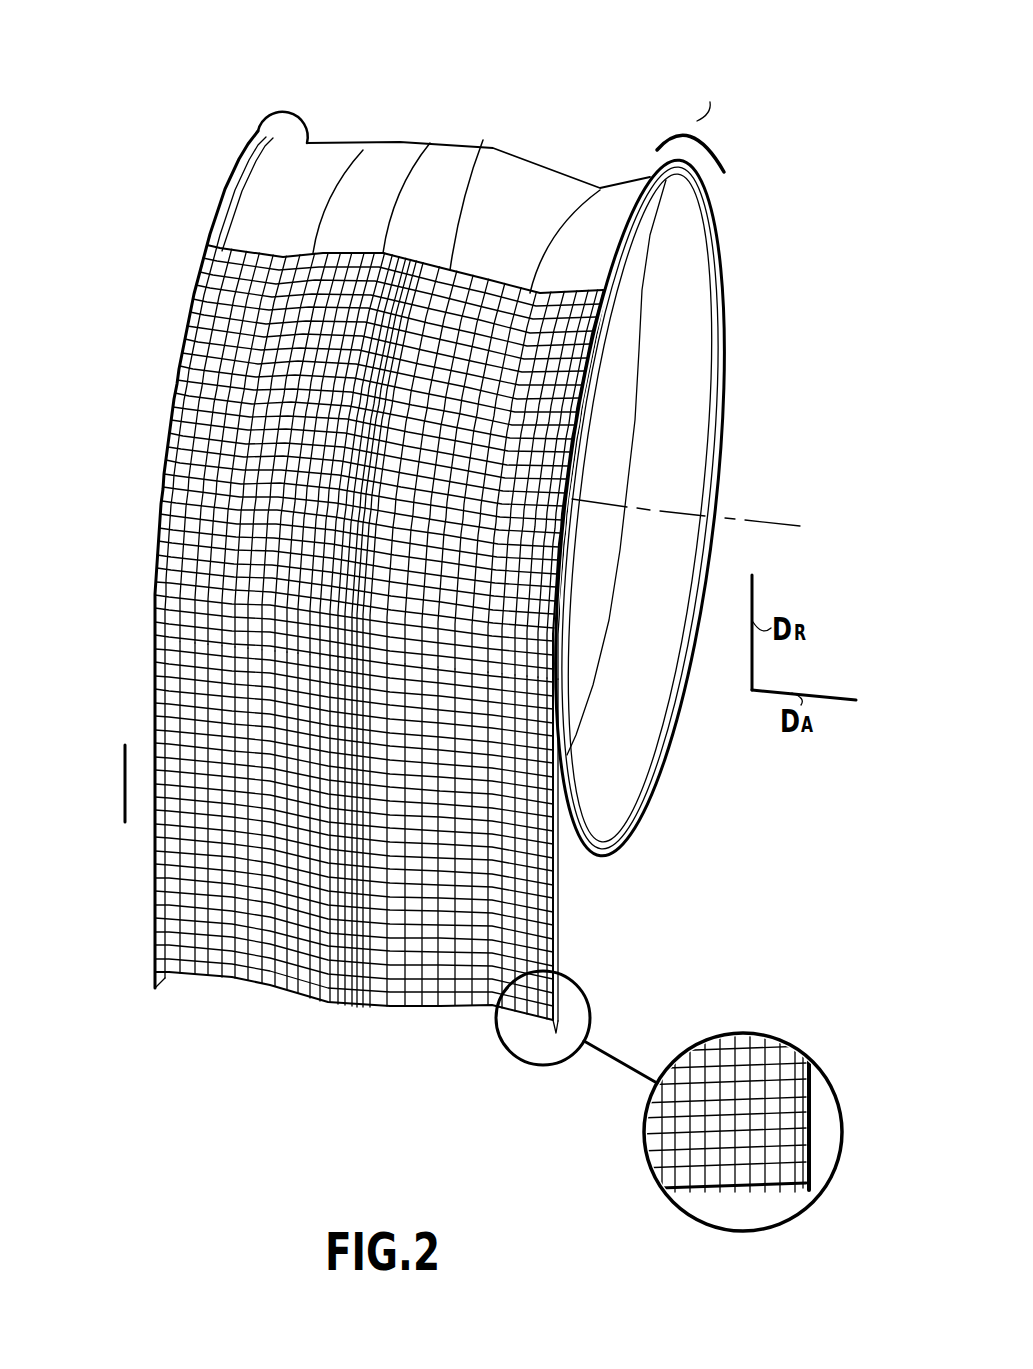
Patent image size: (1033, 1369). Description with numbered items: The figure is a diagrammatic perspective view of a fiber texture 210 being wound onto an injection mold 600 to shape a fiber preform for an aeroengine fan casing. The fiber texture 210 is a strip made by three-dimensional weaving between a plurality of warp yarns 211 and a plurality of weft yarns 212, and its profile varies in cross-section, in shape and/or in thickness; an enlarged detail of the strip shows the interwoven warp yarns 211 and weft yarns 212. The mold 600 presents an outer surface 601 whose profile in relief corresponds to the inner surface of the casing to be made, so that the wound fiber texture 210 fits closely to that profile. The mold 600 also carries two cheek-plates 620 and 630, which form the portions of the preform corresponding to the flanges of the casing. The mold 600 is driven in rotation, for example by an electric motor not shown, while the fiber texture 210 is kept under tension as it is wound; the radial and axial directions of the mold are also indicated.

The injection mold 600 is at (431, 432).
The cheek-plate 620 is at (279, 124).
The outer surface 601 is at (399, 160).
The cheek-plate 630 is at (668, 180).
The fiber texture 210 is at (122, 906).
The warp yarns 211 is at (757, 1160).
The weft yarns 212 is at (668, 1160).